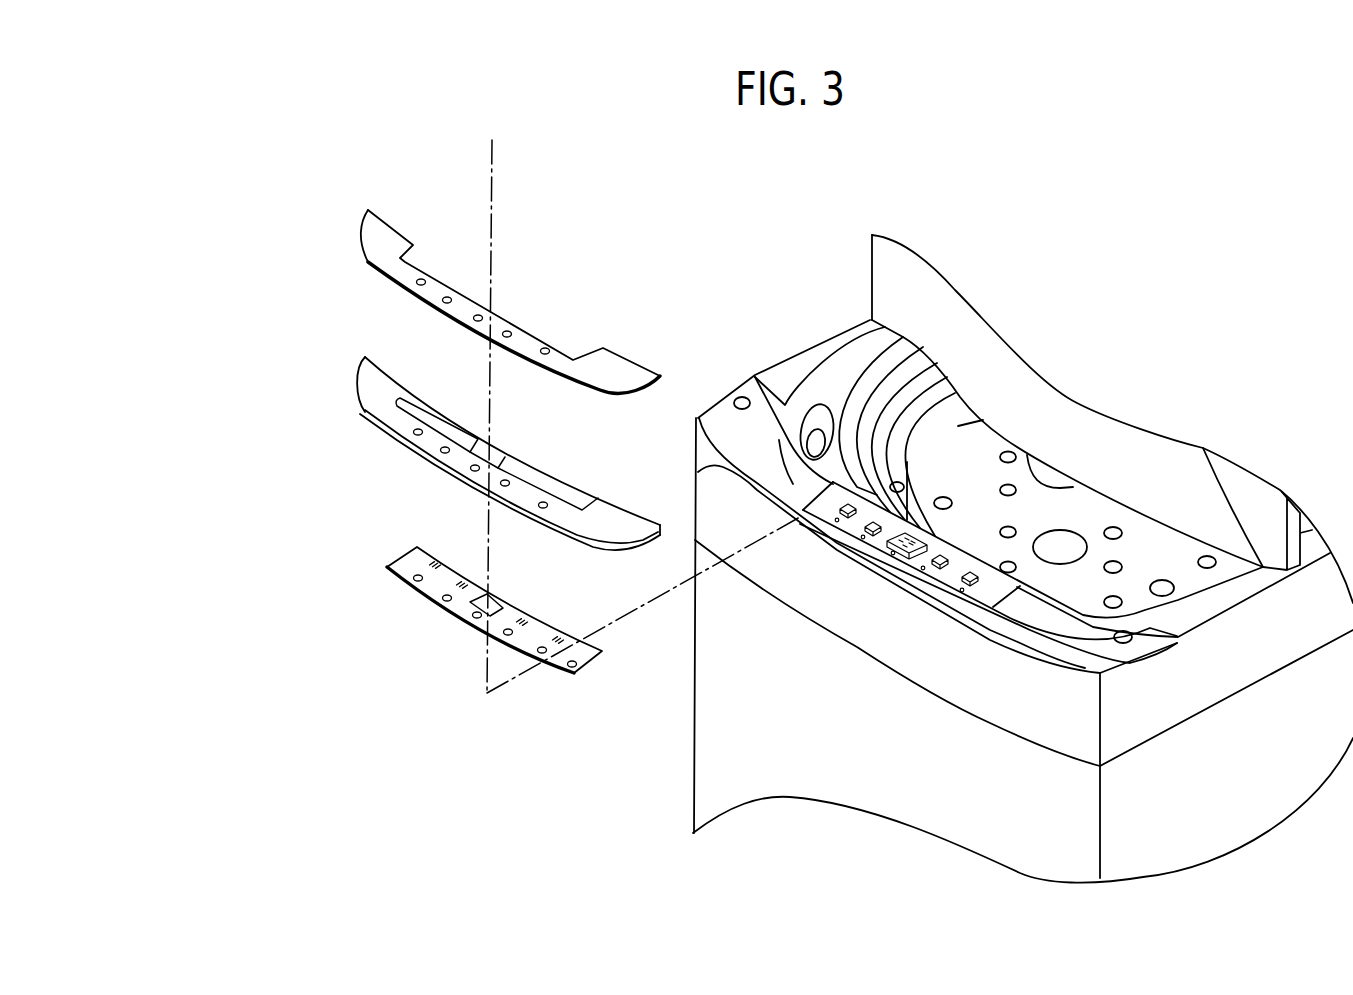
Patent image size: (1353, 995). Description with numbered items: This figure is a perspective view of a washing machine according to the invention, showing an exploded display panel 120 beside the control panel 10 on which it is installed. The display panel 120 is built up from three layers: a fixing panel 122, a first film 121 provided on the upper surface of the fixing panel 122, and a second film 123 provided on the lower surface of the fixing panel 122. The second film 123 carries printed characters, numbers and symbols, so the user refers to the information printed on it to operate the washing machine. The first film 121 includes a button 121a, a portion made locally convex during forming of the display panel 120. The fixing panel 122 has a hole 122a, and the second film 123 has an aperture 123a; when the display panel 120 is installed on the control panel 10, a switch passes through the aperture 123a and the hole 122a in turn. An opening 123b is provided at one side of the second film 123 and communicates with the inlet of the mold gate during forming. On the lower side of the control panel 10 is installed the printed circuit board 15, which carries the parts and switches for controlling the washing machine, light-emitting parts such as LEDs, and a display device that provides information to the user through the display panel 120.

The control panel 10 is at (1083, 641).
The printed circuit board 15 is at (980, 597).
The display panel 120 is at (248, 567).
The first film 121 is at (372, 249).
The button 121a is at (547, 346).
The fixing panel 122 is at (372, 397).
The hole 122a is at (508, 481).
The second film 123 is at (392, 575).
The aperture 123a is at (512, 636).
The opening 123b is at (574, 668).